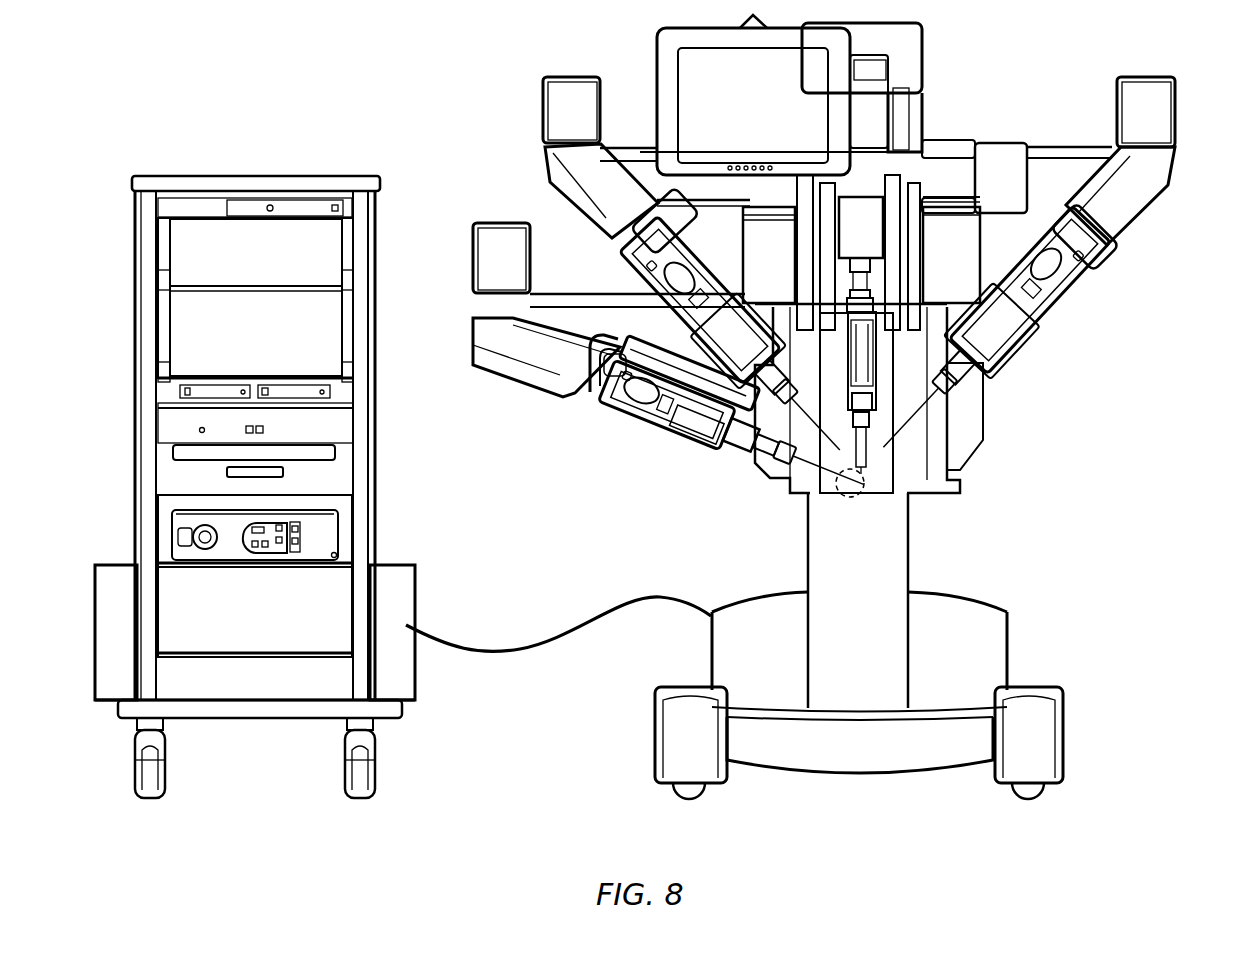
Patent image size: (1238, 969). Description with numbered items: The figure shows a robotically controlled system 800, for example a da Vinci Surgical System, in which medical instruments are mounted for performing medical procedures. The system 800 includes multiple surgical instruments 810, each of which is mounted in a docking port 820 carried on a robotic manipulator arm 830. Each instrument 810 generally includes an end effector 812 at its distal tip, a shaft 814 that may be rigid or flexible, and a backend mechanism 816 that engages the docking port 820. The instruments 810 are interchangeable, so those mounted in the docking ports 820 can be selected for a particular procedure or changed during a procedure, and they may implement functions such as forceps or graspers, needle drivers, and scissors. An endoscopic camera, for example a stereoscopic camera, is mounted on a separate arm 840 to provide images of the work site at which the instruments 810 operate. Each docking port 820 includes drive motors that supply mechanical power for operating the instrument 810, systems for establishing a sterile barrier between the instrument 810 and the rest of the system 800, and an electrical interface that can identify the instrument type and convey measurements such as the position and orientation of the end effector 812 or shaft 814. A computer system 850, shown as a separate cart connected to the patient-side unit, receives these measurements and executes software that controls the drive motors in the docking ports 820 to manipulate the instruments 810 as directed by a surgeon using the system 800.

The robotically controlled system 800 is at (381, 70).
The surgical instrument 810 is at (975, 368).
The end effector 812 is at (852, 498).
The shaft 814 is at (696, 450).
The backend mechanism 816 is at (634, 392).
The docking port 820 is at (604, 400).
The robotic manipulator arm 830 is at (560, 200).
The arm 840 is at (847, 328).
The computer system 850 is at (255, 487).